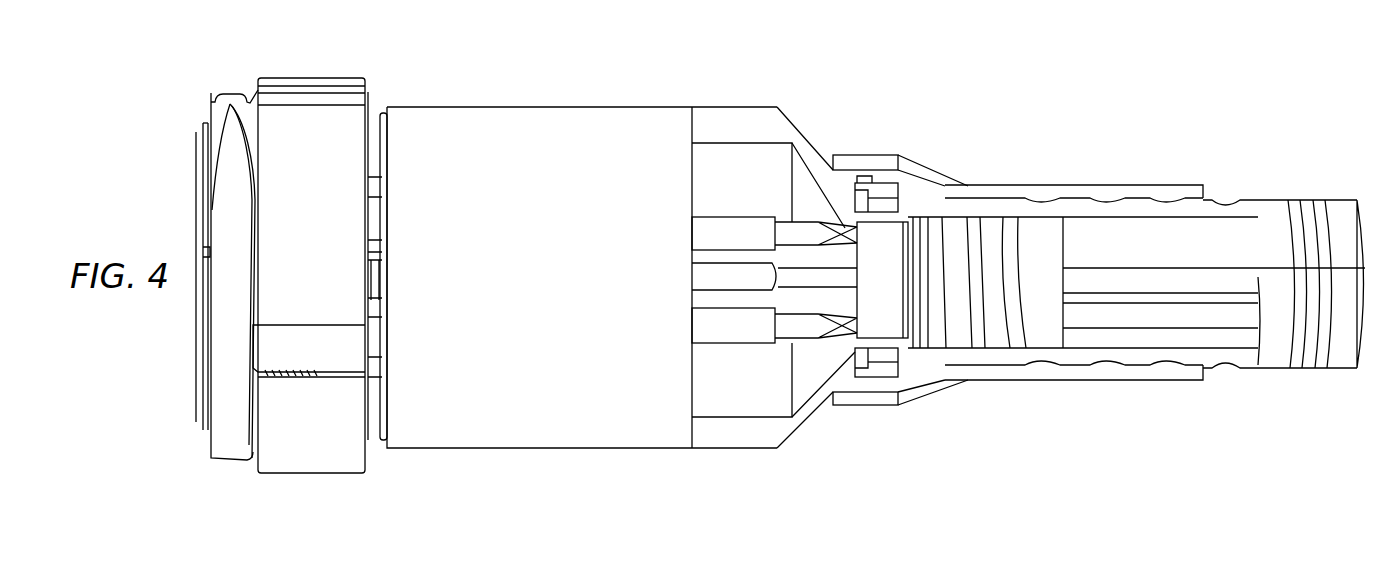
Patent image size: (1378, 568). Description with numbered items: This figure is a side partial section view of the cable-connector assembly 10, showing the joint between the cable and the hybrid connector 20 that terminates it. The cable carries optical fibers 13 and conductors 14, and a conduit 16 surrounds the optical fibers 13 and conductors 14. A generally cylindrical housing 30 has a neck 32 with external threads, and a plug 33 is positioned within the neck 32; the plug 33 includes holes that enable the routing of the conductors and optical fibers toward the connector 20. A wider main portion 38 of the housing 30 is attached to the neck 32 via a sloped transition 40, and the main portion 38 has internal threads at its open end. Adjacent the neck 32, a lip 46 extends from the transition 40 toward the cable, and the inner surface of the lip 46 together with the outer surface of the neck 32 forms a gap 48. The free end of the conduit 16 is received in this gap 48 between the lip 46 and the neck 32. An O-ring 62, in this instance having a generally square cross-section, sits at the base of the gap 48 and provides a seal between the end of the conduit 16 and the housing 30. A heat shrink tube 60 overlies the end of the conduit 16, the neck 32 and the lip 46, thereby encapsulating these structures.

The cable-connector assembly 10 is at (1232, 133).
The optical fibers 13 is at (753, 235).
The conductors 14 is at (805, 280).
The conduit 16 is at (1233, 205).
The hybrid connector 20 is at (338, 118).
The housing 30 is at (718, 70).
The neck 32 is at (994, 327).
The plug 33 is at (885, 252).
The main portion 38 is at (568, 450).
The sloped transition 40 is at (803, 422).
The lip 46 is at (893, 172).
The gap 48 is at (902, 190).
The heat shrink tube 60 is at (1122, 190).
The O-ring 62 is at (872, 180).